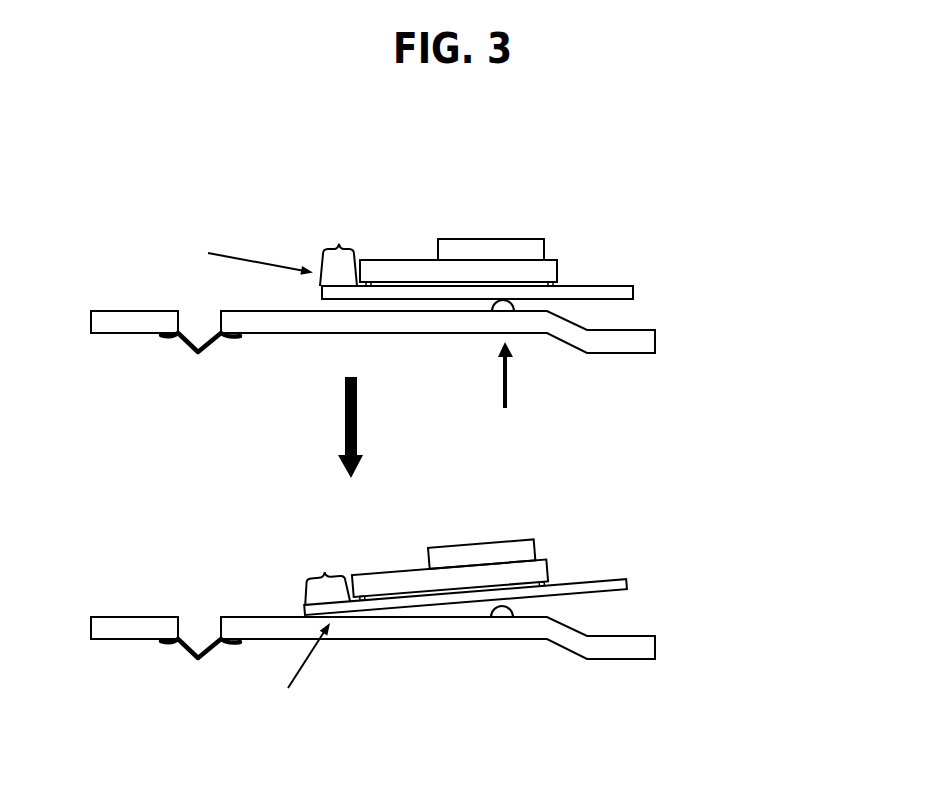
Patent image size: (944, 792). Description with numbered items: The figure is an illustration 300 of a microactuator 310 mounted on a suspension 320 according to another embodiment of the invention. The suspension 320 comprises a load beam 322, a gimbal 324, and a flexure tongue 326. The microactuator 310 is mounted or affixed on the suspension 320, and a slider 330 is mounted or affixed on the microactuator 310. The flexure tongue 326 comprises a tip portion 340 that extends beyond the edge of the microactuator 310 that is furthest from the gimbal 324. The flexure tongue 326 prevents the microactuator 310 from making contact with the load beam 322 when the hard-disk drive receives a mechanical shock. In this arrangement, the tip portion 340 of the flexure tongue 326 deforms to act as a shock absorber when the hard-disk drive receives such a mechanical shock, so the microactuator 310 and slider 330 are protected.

The illustration 300 is at (224, 92).
The microactuator 310 is at (559, 273).
The suspension 320 is at (662, 278).
The load beam 322 is at (282, 334).
The gimbal 324 is at (488, 305).
The flexure tongue 326 is at (573, 295).
The slider 330 is at (545, 248).
The tip portion 340 is at (330, 399).